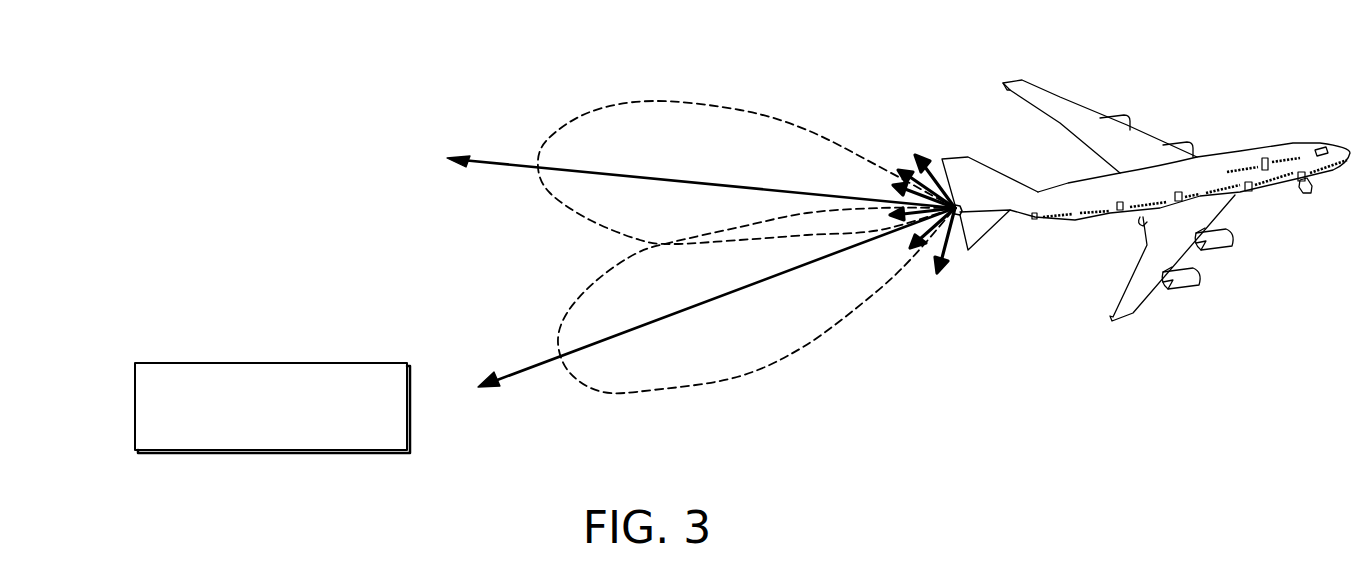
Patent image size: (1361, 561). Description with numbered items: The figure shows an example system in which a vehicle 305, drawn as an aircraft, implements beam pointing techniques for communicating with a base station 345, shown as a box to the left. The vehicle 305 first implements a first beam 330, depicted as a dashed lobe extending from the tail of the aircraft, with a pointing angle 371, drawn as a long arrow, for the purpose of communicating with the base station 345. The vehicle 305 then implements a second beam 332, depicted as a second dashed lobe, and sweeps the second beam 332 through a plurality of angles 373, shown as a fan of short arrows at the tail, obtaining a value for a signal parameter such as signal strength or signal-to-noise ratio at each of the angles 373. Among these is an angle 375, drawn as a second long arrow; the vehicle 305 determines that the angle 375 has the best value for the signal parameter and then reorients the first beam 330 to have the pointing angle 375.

The vehicle 305 is at (1297, 143).
The first beam 330 is at (662, 100).
The second beam 332 is at (790, 352).
The base station 345 is at (135, 407).
The pointing angle 371 is at (512, 164).
The plurality of angles 373 is at (930, 134).
The angle 375 is at (505, 383).